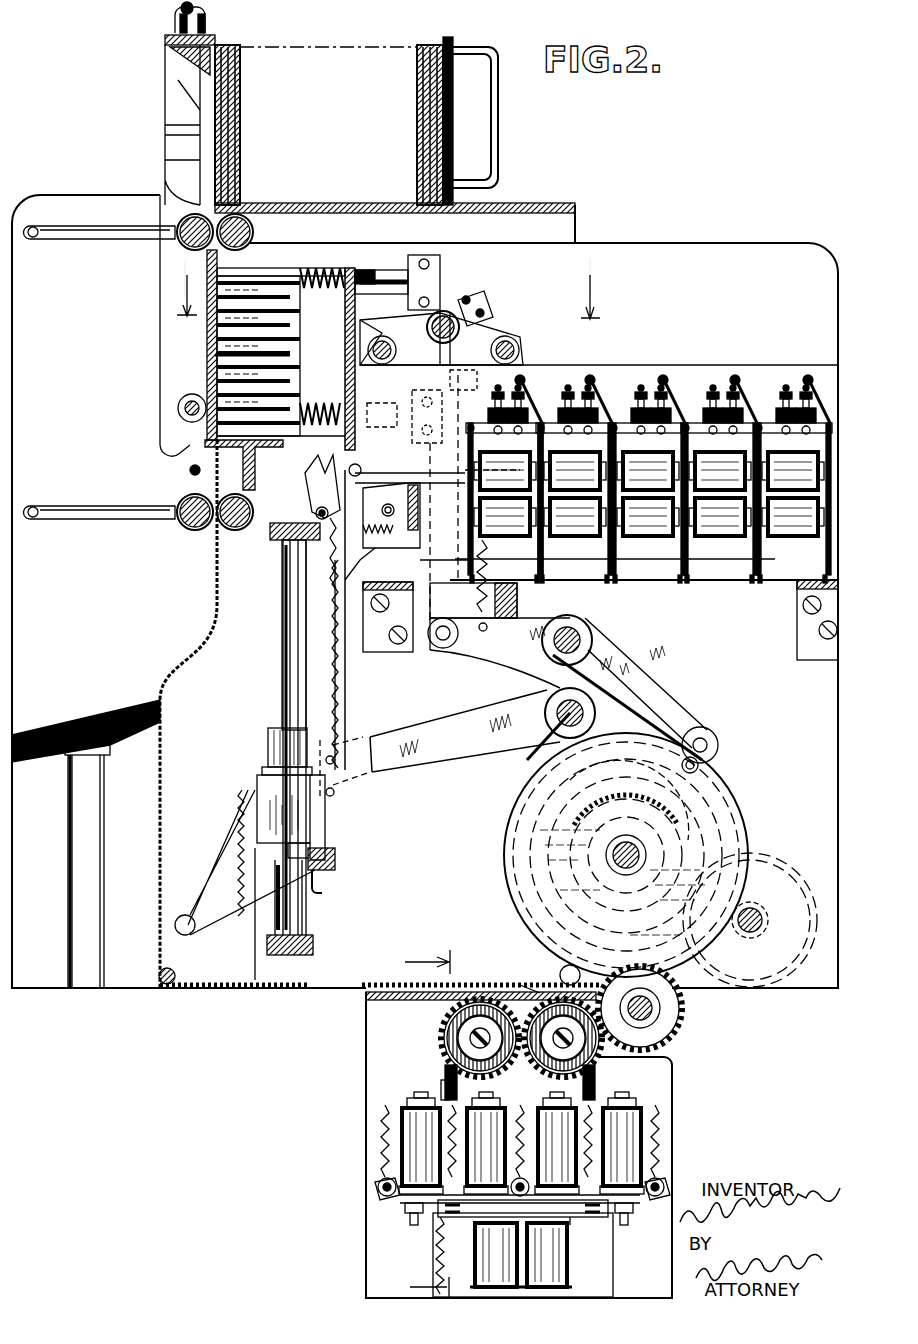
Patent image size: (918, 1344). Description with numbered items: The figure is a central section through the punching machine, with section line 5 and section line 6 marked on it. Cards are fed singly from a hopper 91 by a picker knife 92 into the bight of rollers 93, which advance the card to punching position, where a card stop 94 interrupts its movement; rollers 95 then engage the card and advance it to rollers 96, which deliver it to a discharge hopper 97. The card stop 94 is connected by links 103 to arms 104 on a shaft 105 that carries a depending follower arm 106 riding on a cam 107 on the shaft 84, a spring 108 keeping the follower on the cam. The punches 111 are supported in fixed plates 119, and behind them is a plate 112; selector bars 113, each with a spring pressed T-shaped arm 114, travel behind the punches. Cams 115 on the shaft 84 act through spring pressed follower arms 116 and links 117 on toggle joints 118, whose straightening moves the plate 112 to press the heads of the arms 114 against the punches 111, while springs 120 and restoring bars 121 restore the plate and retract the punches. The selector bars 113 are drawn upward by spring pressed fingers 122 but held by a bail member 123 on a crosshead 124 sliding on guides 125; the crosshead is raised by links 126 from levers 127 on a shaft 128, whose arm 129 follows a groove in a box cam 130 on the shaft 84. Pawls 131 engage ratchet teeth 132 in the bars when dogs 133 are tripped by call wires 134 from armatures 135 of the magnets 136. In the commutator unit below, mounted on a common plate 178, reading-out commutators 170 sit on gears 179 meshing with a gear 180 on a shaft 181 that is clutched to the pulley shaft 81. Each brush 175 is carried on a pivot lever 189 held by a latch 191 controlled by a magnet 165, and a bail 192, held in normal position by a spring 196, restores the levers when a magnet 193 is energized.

The picker knife 92 is at (205, 38).
The hopper 91 is at (245, 70).
The rollers 93 is at (190, 245).
The rollers 96 is at (192, 528).
The rollers 95 is at (180, 403).
The card stop 94 is at (185, 466).
The restoring bars 121 is at (215, 355).
The fixed plates 119 is at (285, 275).
The springs 120 is at (313, 268).
The punches 111 is at (292, 333).
The plate 112 is at (345, 355).
The toggle joint 118 is at (490, 340).
The links 103 is at (415, 470).
The T-shaped arm 114 is at (318, 455).
The pawls 131 is at (283, 565).
The dog 133 is at (395, 545).
The call wires 134 is at (435, 560).
The armatures 135 is at (468, 490).
The ratchet teeth 132 is at (342, 672).
The guides 125 is at (282, 660).
The crosshead 124 is at (268, 742).
The selector bars 113 is at (335, 635).
The bail member 123 is at (335, 860).
The spring pressed fingers 122 is at (322, 893).
The discharge hopper 97 is at (86, 725).
The magnets 136 is at (505, 520).
The links 117 is at (440, 625).
The arms 104 is at (590, 606).
The shaft 105 is at (592, 636).
The follower arm 106 is at (542, 689).
The follower arms 116 is at (618, 666).
The arm 129 is at (650, 700).
The shaft 128 is at (563, 718).
The levers 127 is at (450, 752).
The links 126 is at (335, 778).
The box cam 130 is at (750, 842).
The spring 108 is at (700, 798).
The cam 107 is at (690, 815).
The shaft 84 is at (620, 865).
The pulley shaft 81 is at (760, 922).
The cams 115 is at (570, 968).
The reading-out commutators 170 is at (520, 985).
The plate 178 is at (366, 1030).
The gears 179 is at (448, 1022).
The gear 180 is at (682, 1030).
The shaft 181 is at (665, 1012).
The brush 175 is at (450, 1075).
The pivot lever 189 is at (443, 1093).
The magnets 165 is at (470, 1145).
The latch 191 is at (380, 1190).
The spring 196 is at (435, 1240).
The magnet 193 is at (545, 1255).
The bail 192 is at (580, 1225).
The section line 5 is at (388, 300).
The section line 6 is at (437, 1124).